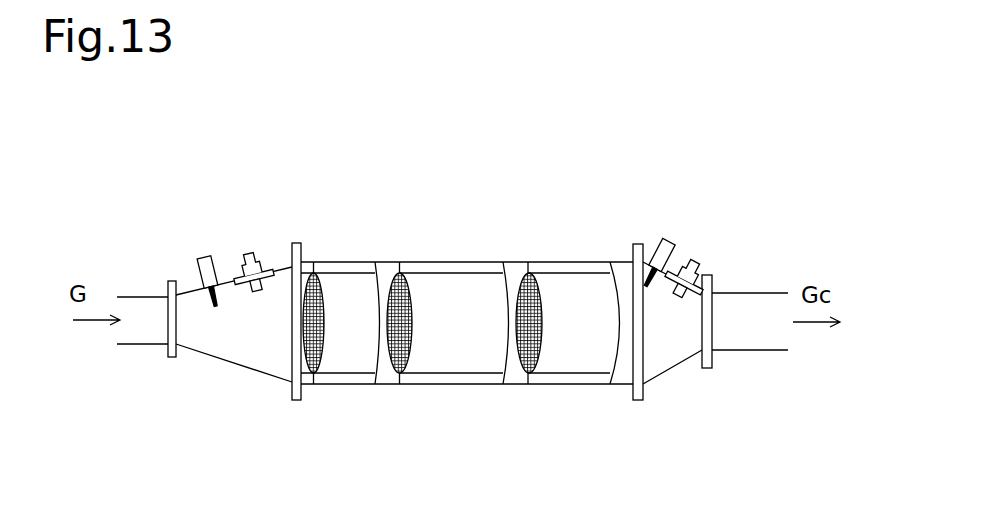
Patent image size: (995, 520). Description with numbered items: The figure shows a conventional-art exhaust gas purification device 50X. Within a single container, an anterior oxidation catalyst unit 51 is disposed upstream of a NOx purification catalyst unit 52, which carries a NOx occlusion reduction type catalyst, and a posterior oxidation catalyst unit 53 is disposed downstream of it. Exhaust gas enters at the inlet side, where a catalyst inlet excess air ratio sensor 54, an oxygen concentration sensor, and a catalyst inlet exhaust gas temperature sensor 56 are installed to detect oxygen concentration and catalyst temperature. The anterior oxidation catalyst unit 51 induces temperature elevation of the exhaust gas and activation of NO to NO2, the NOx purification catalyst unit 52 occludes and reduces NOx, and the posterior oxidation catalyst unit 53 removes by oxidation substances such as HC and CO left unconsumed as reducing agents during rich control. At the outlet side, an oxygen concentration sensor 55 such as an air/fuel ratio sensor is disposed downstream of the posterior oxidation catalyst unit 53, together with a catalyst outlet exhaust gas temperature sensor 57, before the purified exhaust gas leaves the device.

The exhaust gas purification device 50X is at (403, 262).
The anterior oxidation catalyst unit 51 is at (345, 342).
The NOx purification catalyst unit 52 is at (455, 333).
The posterior oxidation catalyst unit 53 is at (578, 335).
The catalyst inlet excess air ratio sensor 54 is at (248, 240).
The oxygen concentration sensor 55 is at (695, 255).
The catalyst inlet exhaust gas temperature sensor 56 is at (208, 253).
The catalyst outlet exhaust gas temperature sensor 57 is at (663, 243).